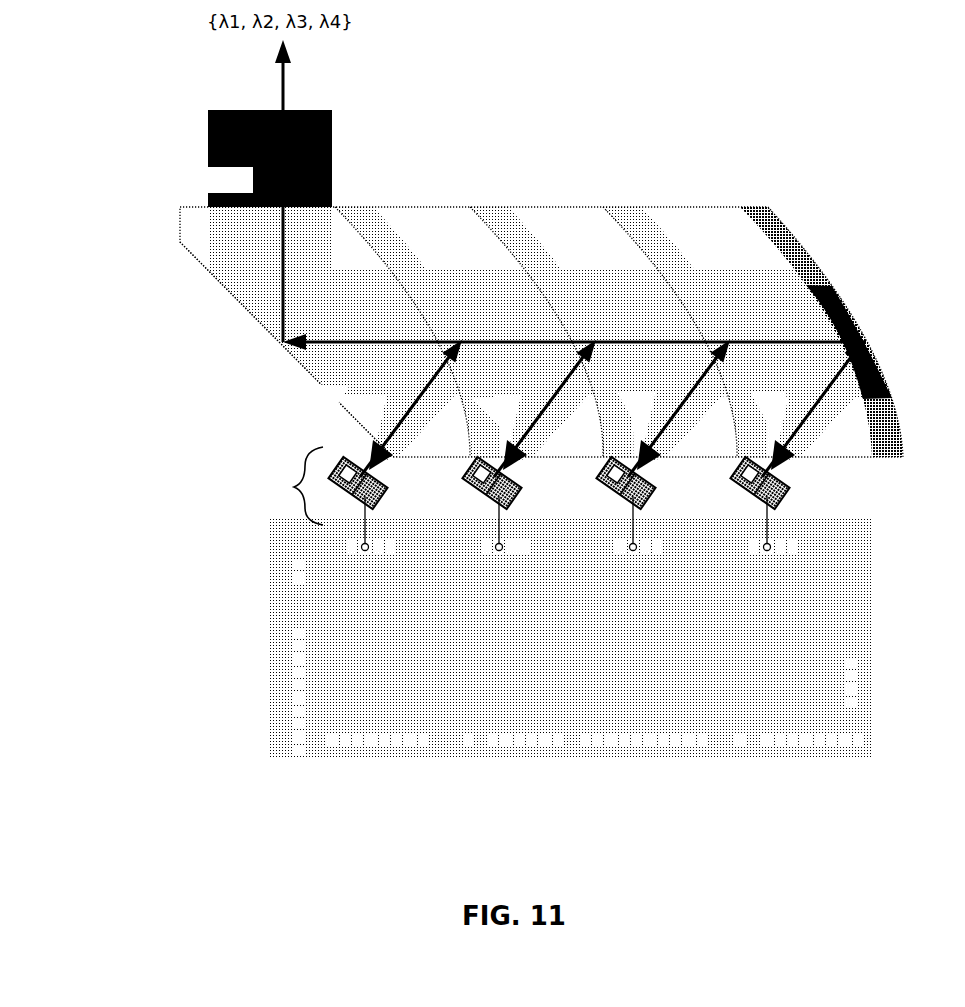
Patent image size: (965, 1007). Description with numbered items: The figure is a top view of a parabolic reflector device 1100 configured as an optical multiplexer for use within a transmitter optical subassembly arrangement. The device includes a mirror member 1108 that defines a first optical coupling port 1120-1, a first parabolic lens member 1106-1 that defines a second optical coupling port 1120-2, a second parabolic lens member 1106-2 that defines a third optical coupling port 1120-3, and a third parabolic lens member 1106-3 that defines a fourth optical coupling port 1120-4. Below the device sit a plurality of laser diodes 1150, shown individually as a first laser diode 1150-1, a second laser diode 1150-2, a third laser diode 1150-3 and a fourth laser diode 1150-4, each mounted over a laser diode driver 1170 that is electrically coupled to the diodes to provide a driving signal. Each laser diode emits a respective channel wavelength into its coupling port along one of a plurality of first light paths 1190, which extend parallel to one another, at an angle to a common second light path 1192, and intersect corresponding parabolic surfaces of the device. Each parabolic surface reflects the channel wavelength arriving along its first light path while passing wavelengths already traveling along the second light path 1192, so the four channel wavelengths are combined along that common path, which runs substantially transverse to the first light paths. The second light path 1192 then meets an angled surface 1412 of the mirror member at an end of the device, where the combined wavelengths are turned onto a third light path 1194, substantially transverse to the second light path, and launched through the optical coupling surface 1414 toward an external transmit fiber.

The parabolic reflector device 1100 is at (162, 193).
The mirror member 1108 is at (253, 293).
The angled surface 1412 is at (206, 275).
The optical coupling surface 1414 is at (306, 197).
The third light path 1194 is at (278, 177).
The first parabolic lens member 1106-1 is at (450, 212).
The second parabolic lens member 1106-2 is at (597, 212).
The third parabolic lens member 1106-3 is at (731, 215).
The first optical coupling port 1120-1 is at (370, 428).
The second optical coupling port 1120-2 is at (535, 471).
The third optical coupling port 1120-3 is at (675, 469).
The fourth optical coupling port 1120-4 is at (815, 471).
The first light paths 1190 is at (814, 396).
The second light path 1192 is at (354, 332).
The laser diode driver 1170 is at (846, 635).
The plurality of laser diodes 1150 is at (278, 486).
The first laser diode 1150-1 is at (384, 507).
The second laser diode 1150-2 is at (513, 513).
The third laser diode 1150-3 is at (648, 513).
The fourth laser diode 1150-4 is at (781, 513).